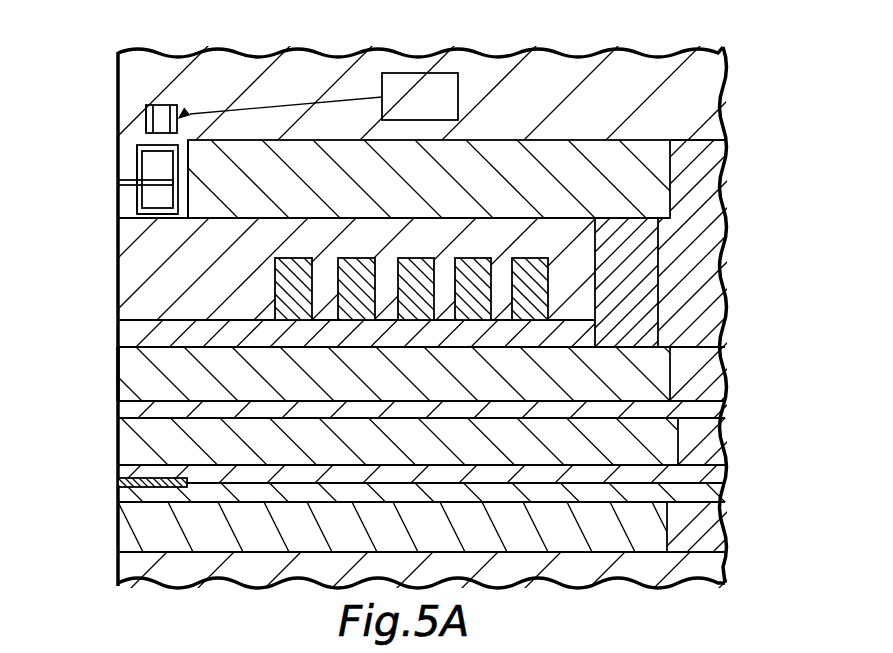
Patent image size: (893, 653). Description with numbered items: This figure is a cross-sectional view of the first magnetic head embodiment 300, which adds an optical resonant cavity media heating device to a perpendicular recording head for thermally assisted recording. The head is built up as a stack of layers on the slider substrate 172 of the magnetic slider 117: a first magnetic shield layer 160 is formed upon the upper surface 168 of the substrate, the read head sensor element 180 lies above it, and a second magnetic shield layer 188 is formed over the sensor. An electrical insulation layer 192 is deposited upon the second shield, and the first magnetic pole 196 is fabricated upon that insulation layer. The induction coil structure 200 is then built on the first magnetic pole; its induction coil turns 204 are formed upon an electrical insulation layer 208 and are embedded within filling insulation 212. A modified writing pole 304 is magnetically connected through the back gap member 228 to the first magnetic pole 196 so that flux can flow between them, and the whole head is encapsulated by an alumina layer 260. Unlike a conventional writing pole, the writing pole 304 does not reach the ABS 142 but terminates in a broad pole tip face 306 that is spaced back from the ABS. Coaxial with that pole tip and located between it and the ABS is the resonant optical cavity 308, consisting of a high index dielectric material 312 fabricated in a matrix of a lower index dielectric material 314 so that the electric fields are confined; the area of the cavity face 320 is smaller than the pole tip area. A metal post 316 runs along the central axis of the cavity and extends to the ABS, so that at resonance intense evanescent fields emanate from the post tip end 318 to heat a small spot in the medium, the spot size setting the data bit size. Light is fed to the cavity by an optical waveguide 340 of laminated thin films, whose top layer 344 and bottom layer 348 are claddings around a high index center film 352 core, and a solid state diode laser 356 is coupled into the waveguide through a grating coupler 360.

The magnetic head embodiment 300 is at (596, 42).
The alumina layer 260 is at (618, 117).
The writing pole 304 is at (662, 172).
The pole tip face 306 is at (190, 142).
The induction coil structure 200 is at (570, 264).
The back gap member 228 is at (635, 291).
The filling insulation 212 is at (238, 278).
The induction coil turns 204 is at (470, 256).
The electrical insulation layer 208 is at (582, 333).
The first magnetic pole 196 is at (647, 372).
The ABS 142 is at (118, 384).
The electrical insulation layer 192 is at (707, 410).
The second magnetic shield layer 188 is at (660, 440).
The read head sensor element 180 is at (118, 484).
The first magnetic shield layer 160 is at (655, 517).
The upper surface 168 is at (645, 543).
The magnetic slider 117 is at (270, 578).
The slider substrate 172 is at (648, 573).
The solid state diode laser 356 is at (444, 113).
The optical waveguide 340 is at (162, 106).
The center film 352 is at (155, 108).
The bottom layer 348 is at (173, 107).
The top layer 344 is at (151, 118).
The grating coupler 360 is at (183, 114).
The dielectric material 312 is at (152, 160).
The face of the cavity 320 is at (190, 197).
The metal post 316 is at (136, 175).
The post tip end 318 is at (120, 183).
The resonant optical cavity 308 is at (142, 199).
The dielectric material 314 is at (145, 218).